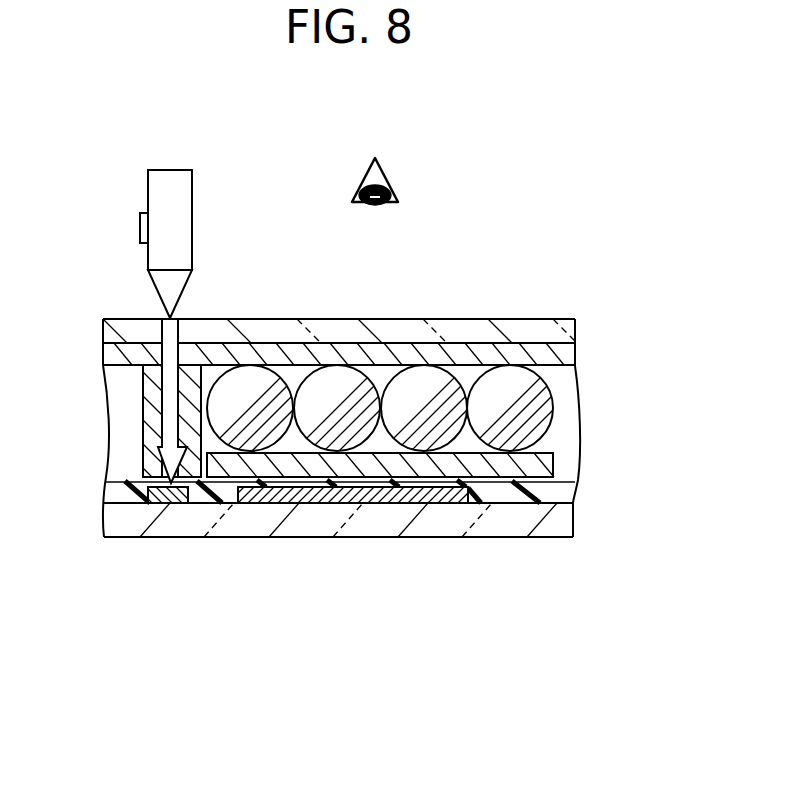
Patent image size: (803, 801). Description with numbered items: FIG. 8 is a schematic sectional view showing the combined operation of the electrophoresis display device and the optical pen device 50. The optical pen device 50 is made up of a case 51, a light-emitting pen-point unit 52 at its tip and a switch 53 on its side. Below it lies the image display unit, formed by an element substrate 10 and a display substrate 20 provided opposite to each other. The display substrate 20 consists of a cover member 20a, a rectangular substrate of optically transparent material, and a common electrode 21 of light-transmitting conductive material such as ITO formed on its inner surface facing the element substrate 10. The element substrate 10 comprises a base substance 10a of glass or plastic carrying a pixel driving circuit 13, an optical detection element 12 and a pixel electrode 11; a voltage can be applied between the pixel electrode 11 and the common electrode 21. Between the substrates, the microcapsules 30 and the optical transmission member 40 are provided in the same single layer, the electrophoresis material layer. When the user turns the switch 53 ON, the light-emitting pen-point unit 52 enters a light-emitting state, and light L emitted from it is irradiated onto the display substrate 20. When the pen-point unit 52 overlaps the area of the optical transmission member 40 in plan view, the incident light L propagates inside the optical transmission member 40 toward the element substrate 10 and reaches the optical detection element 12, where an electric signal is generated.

The element substrate 10 is at (584, 528).
The base substance 10a is at (480, 537).
The pixel electrode 11 is at (548, 466).
The optical detection element 12 is at (176, 503).
The pixel driving circuit 13 is at (322, 503).
The display substrate 20 is at (570, 312).
The cover member 20a is at (343, 327).
The common electrode 21 is at (476, 352).
The microcapsule 30 is at (545, 405).
The optical transmission member 40 is at (145, 390).
The light L is at (162, 424).
The optical pen device 50 is at (169, 193).
The case 51 is at (183, 205).
The light-emitting pen-point unit 52 is at (177, 282).
The switch 53 is at (140, 228).